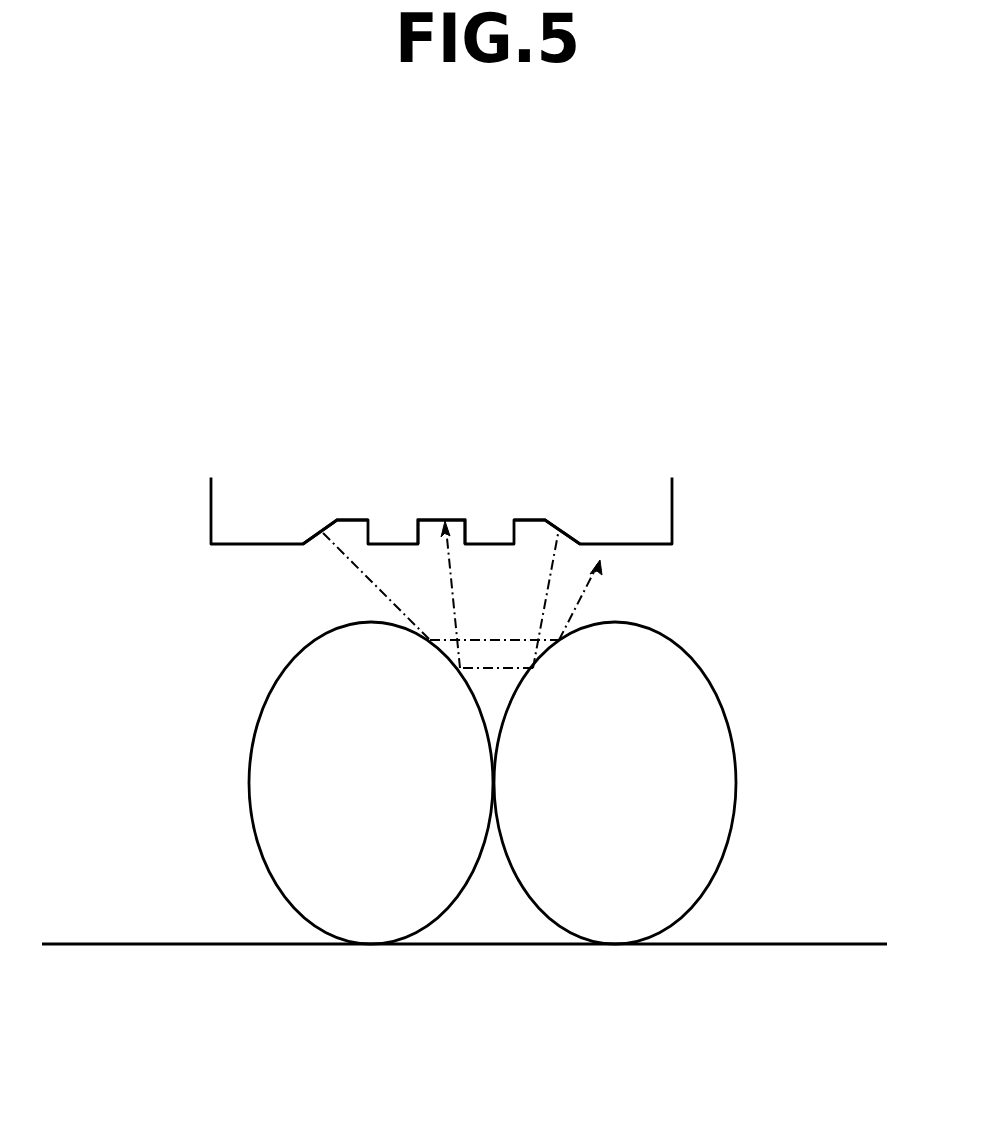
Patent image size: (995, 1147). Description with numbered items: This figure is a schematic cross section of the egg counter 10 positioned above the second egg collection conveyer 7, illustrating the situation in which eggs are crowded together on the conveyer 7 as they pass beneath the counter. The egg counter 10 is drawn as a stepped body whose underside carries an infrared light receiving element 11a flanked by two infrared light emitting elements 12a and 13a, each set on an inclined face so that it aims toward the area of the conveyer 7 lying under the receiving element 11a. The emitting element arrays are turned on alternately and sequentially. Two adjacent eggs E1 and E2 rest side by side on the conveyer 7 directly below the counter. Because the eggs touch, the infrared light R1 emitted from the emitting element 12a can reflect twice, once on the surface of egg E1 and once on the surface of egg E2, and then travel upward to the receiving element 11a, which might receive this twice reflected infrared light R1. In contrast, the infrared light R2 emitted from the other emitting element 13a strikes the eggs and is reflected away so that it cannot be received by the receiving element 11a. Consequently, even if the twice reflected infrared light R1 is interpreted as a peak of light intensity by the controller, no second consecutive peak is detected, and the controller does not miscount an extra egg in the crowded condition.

The egg counter 10 is at (672, 511).
The infrared light receiving element 11a is at (452, 520).
The infrared light emitting element 12a is at (558, 528).
The infrared light emitting element 13a is at (328, 530).
The second egg collection conveyer 7 is at (142, 944).
The egg E1 is at (735, 746).
The egg E2 is at (250, 742).
The infrared light R1 is at (499, 594).
The reflected infrared light R2 is at (461, 586).